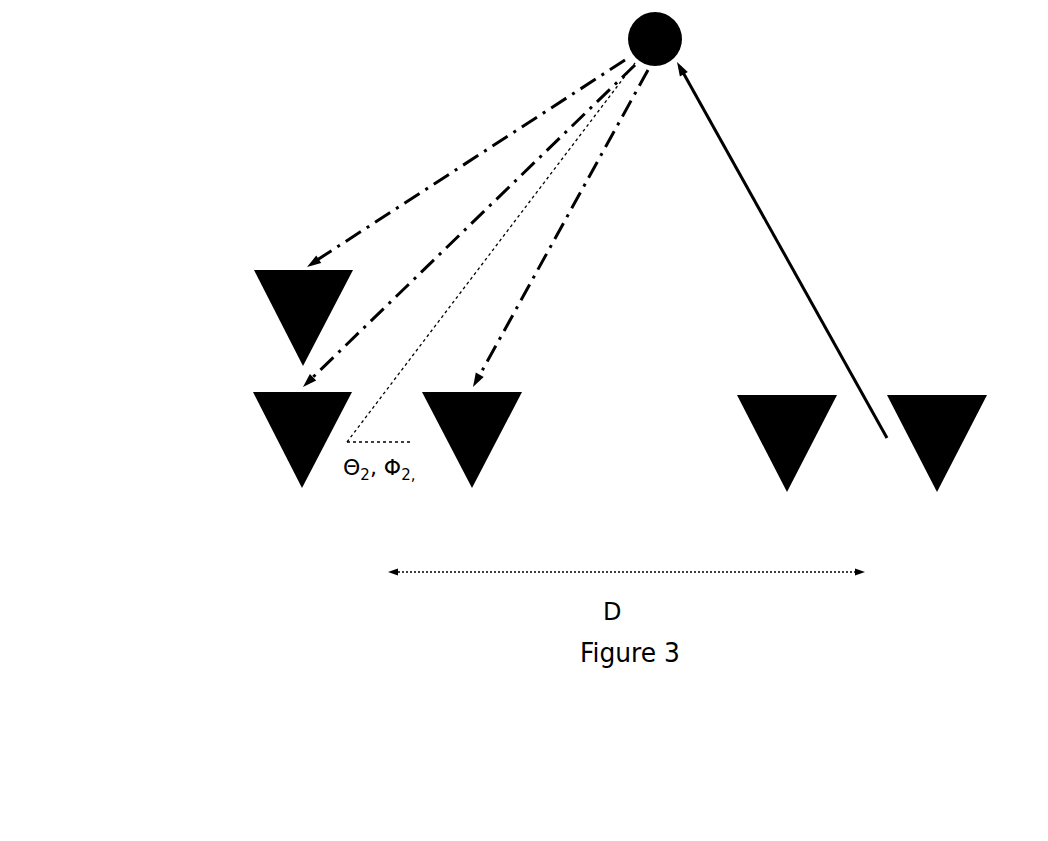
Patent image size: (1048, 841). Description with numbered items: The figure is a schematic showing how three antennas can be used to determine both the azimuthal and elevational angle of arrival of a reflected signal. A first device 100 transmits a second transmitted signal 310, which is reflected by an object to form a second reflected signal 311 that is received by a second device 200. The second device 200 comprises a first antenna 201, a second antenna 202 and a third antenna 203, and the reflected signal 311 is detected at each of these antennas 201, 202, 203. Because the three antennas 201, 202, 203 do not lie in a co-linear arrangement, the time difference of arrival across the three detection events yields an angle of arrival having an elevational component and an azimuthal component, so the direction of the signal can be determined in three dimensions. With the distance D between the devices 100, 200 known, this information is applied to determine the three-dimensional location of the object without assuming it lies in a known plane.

The first device 100 is at (956, 411).
The second device 200 is at (318, 399).
The first antenna 201 is at (302, 460).
The second antenna 202 is at (472, 460).
The third antenna 203 is at (283, 318).
The second transmitted signal 310 is at (782, 250).
The second reflected signal 311 is at (475, 223).